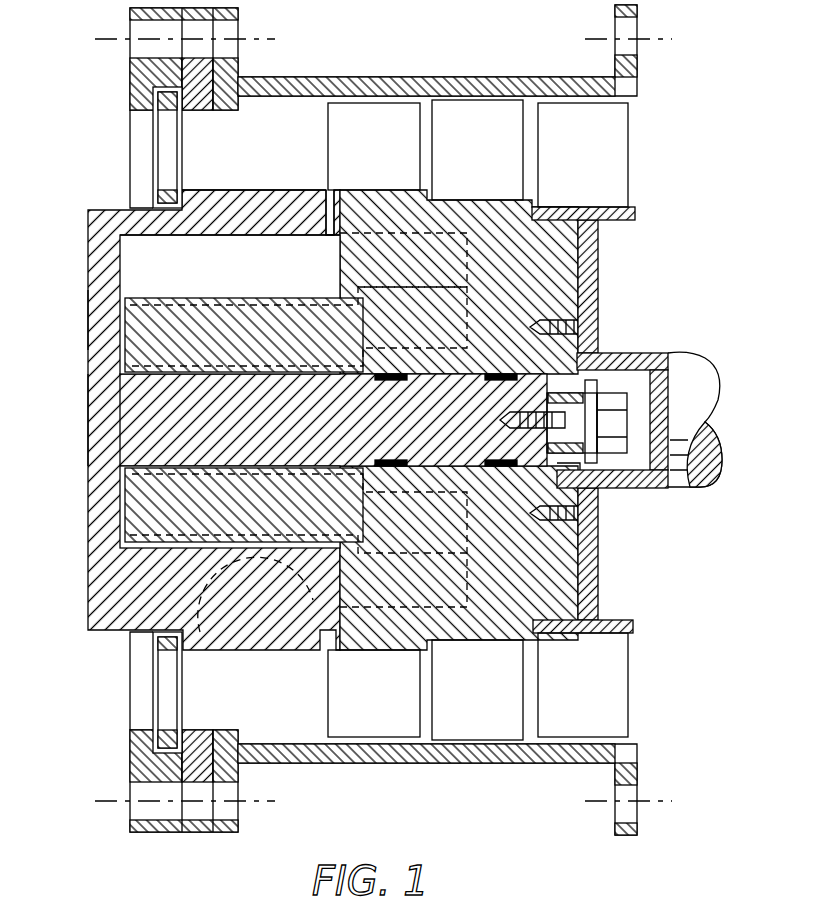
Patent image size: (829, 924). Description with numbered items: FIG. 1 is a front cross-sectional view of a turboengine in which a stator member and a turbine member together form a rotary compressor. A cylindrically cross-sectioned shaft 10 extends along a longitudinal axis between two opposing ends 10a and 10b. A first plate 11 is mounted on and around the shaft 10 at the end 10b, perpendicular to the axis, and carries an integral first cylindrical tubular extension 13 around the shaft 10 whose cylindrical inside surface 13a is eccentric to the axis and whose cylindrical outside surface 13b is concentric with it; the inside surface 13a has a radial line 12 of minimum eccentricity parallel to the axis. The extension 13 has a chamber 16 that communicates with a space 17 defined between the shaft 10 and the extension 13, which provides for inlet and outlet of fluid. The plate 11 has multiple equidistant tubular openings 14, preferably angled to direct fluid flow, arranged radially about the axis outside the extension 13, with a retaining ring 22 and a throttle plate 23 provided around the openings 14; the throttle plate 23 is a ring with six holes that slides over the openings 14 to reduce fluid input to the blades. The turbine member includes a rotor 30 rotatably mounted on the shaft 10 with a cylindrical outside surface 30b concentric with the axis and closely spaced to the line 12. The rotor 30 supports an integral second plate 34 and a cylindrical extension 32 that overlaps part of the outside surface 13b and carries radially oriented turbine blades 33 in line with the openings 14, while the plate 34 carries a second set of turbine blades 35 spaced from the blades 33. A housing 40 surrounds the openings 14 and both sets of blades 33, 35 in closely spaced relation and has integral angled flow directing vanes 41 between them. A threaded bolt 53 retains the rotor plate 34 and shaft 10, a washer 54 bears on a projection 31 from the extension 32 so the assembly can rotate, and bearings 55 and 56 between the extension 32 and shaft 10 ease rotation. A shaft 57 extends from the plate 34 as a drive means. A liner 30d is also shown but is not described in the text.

The shaft 10 is at (148, 422).
The end of shaft 10a is at (88, 428).
The end of shaft 10b is at (553, 393).
The first plate 11 is at (102, 317).
The radial line of minimum eccentricity 12 is at (120, 497).
The first cylindrical tubular extension 13 is at (220, 204).
The cylindrical inside surface 13a is at (247, 236).
The cylindrical outside surface 13b is at (332, 196).
The tubular openings 14 is at (254, 419).
The chamber 16 is at (232, 648).
The space 17 is at (140, 262).
The retaining ring 22 is at (140, 74).
The throttle plate 23 is at (162, 108).
The rotor 30 is at (213, 312).
The cylindrical outside surface 30b is at (278, 300).
The coil liner 30d is at (137, 365).
The projection 31 is at (570, 462).
The cylindrical extension 32 is at (538, 270).
The turbine blades 33 is at (362, 152).
The second plate 34 is at (592, 242).
The second set of turbine blades 35 is at (560, 142).
The housing 40 is at (440, 77).
The flow directing vanes 41 is at (470, 142).
The threaded bolt 53 is at (608, 400).
The washer 54 is at (580, 443).
The bearing 55 is at (558, 557).
The bearing 56 is at (500, 475).
The shaft 57 is at (700, 392).